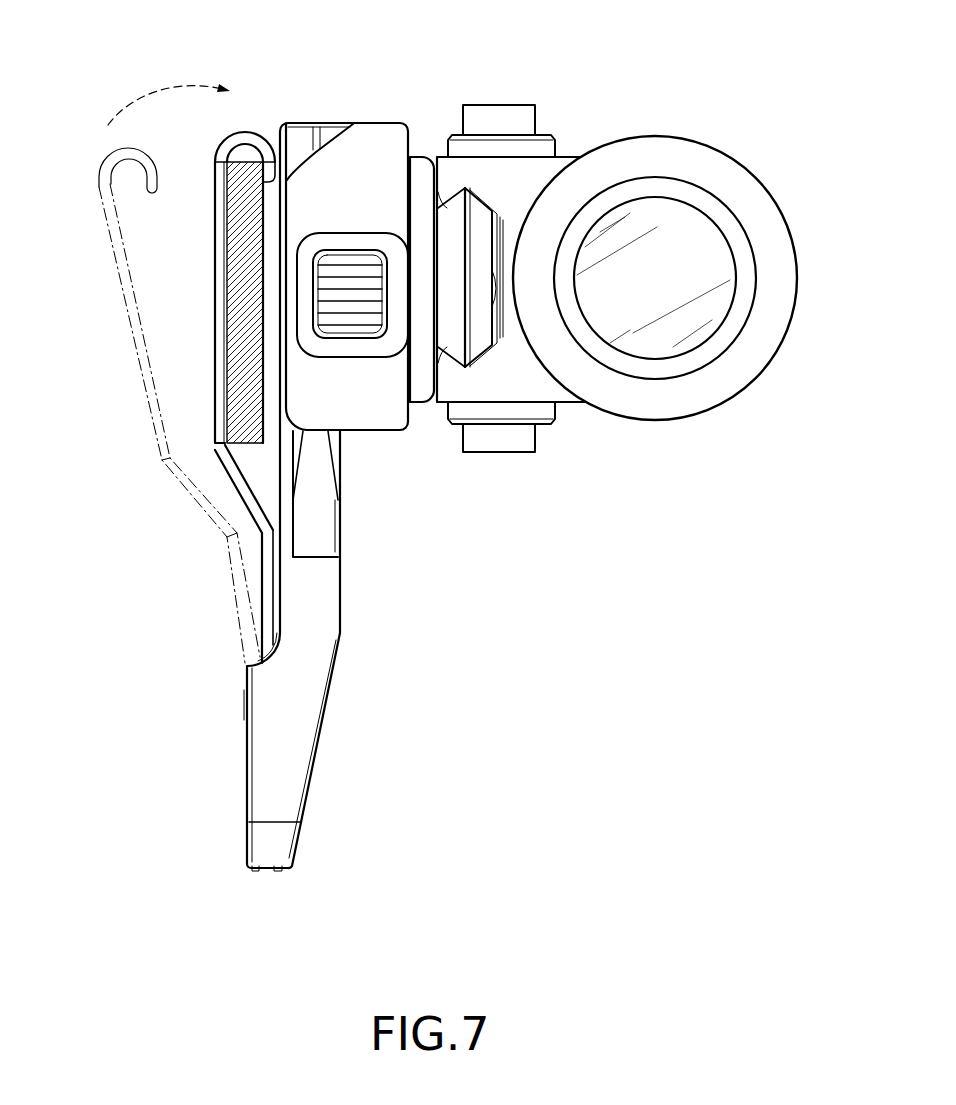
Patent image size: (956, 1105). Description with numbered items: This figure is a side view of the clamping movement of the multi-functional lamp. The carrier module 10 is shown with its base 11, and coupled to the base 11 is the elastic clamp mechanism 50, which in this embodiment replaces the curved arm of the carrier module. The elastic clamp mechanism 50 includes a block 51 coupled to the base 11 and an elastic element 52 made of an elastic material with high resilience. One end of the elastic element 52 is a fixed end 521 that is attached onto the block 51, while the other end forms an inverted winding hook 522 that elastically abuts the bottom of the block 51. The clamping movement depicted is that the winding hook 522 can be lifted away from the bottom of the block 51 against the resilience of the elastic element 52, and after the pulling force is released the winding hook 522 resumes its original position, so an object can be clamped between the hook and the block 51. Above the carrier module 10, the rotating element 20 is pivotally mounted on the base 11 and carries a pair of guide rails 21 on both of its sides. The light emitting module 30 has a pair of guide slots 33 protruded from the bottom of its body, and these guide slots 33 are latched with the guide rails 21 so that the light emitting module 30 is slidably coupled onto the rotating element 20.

The carrier module 10 is at (366, 114).
The base 11 is at (386, 142).
The rotating element 20 is at (421, 410).
The guide rails 21 is at (446, 304).
The light emitting module 30 is at (733, 140).
The guide slots 33 is at (473, 188).
The elastic clamp mechanism 50 is at (243, 770).
The block 51 is at (262, 798).
The elastic element 52 is at (218, 290).
The fixed end 521 is at (270, 622).
The winding hook 522 is at (246, 142).